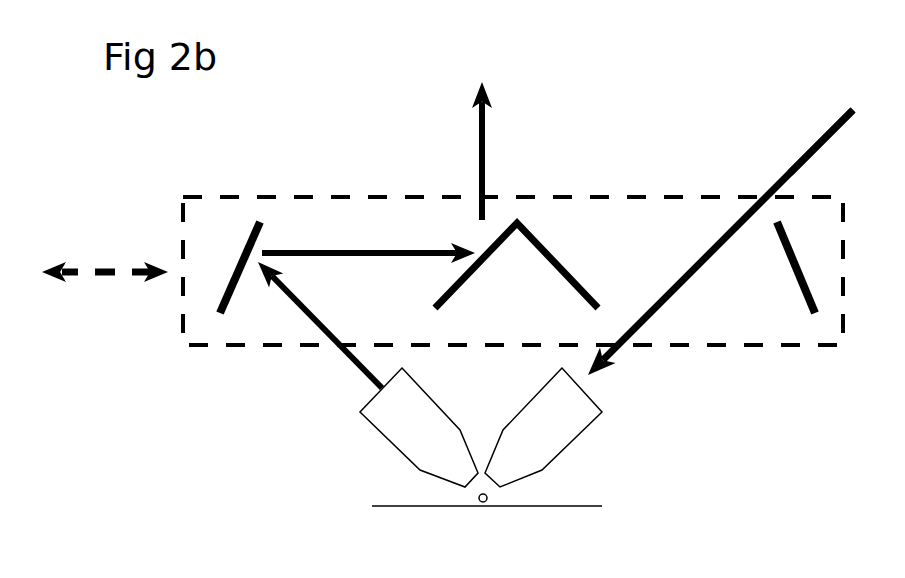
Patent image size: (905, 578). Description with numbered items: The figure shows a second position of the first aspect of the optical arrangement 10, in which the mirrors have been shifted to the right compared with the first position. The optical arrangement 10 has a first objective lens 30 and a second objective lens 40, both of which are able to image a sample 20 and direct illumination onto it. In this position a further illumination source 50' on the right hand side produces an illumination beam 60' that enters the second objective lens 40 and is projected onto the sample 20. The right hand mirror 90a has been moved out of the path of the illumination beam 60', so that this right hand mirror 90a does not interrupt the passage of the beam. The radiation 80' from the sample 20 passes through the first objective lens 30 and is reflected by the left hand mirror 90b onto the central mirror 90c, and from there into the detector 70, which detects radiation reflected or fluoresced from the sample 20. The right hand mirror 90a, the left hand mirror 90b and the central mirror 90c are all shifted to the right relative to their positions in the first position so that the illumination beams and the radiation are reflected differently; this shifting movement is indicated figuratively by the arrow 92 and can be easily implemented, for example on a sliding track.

The optical arrangement 10 is at (518, 191).
The sample 20 is at (488, 503).
The first objective lens 30 is at (417, 427).
The second objective lens 40 is at (549, 427).
The further illumination source 50' is at (820, 141).
The illumination beam 60' is at (720, 242).
The detector 70 is at (500, 142).
The radiation 80' is at (320, 325).
The right hand mirror 90a is at (806, 267).
The left hand mirror 90b is at (231, 264).
The central mirror 90c is at (430, 265).
The arrow 92 is at (105, 256).